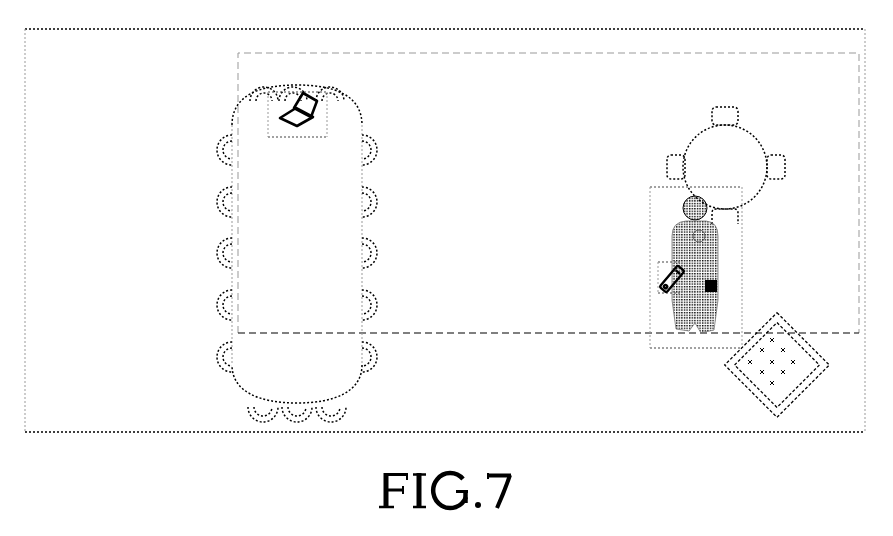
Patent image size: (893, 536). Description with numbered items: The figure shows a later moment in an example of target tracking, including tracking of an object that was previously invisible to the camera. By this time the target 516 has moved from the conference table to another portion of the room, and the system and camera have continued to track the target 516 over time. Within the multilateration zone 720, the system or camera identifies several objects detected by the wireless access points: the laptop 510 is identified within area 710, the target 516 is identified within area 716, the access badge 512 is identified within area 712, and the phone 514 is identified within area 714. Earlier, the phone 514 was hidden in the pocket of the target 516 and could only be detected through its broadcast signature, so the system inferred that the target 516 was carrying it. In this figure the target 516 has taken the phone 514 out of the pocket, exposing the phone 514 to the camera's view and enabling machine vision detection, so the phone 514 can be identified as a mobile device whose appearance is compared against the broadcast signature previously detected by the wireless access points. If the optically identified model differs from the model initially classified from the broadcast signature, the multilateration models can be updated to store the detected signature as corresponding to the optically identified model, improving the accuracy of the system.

The laptop 510 is at (283, 120).
The area 710 is at (322, 113).
The target 516 is at (674, 226).
The area 716 is at (743, 237).
The area 712 is at (703, 238).
The access badge 512 is at (701, 248).
The multilateration zone 720 is at (497, 331).
The phone 514 is at (658, 281).
The area 714 is at (667, 293).